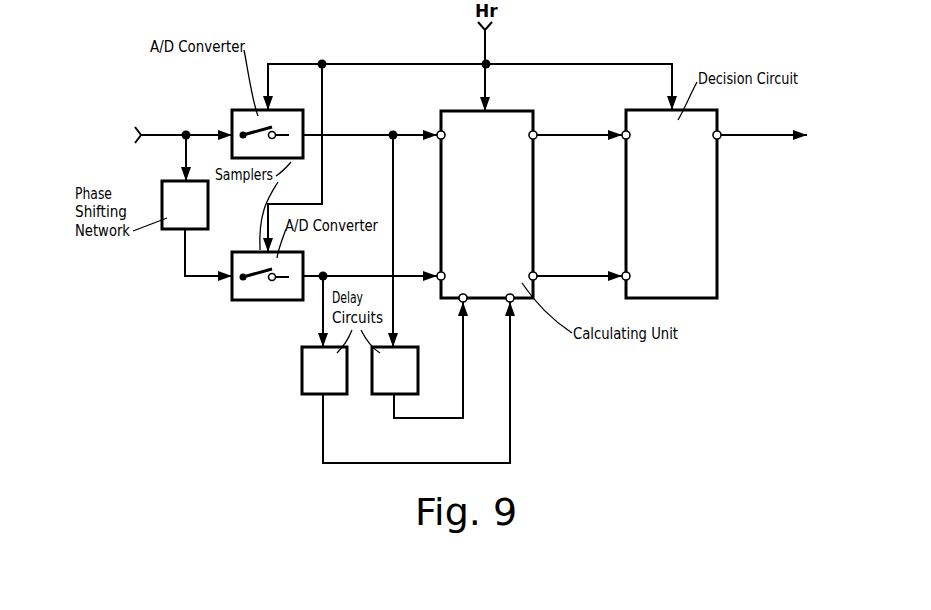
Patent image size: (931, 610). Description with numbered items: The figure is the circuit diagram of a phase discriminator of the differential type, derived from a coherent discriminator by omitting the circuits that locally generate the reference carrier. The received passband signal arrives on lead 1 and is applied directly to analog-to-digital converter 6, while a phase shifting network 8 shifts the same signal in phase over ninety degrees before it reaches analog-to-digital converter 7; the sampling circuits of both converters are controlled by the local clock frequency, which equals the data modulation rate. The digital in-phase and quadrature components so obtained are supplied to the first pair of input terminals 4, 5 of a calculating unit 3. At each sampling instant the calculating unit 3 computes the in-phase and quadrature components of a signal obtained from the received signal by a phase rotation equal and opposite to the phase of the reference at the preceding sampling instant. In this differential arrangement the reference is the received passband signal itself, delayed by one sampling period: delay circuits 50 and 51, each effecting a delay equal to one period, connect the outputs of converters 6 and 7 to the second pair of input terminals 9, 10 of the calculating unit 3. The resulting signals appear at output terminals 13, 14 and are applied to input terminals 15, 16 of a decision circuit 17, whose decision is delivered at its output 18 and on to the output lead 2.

The lead 1 is at (163, 134).
The output terminal 2 is at (780, 134).
The calculating unit 3 is at (440, 176).
The input terminal 4 is at (438, 134).
The input terminal 5 is at (440, 275).
The analog-to-digital converter 6 is at (250, 110).
The analog-to-digital converter 7 is at (244, 251).
The phase shifting network 8 is at (208, 195).
The input terminal 9 is at (461, 302).
The input terminal 10 is at (512, 302).
The output terminal 13 is at (536, 133).
The output terminal 14 is at (536, 275).
The input terminal 15 is at (622, 134).
The input terminal 16 is at (622, 275).
The decision circuit 17 is at (719, 192).
The output of decision circuit 18 is at (719, 133).
The delay circuit 50 is at (302, 370).
The delay circuit 51 is at (418, 368).